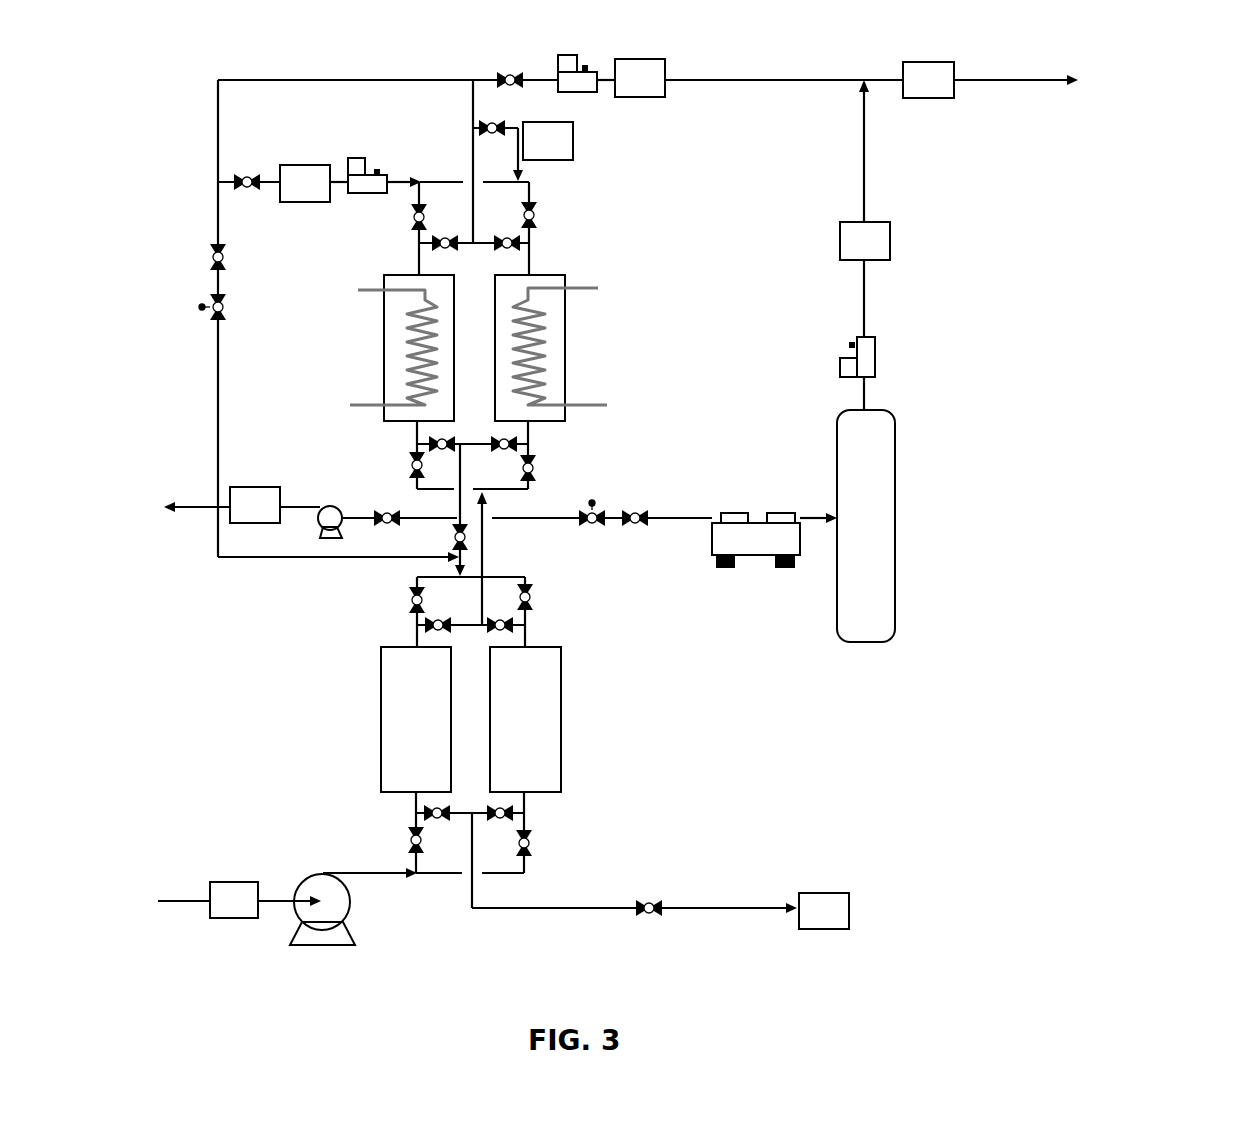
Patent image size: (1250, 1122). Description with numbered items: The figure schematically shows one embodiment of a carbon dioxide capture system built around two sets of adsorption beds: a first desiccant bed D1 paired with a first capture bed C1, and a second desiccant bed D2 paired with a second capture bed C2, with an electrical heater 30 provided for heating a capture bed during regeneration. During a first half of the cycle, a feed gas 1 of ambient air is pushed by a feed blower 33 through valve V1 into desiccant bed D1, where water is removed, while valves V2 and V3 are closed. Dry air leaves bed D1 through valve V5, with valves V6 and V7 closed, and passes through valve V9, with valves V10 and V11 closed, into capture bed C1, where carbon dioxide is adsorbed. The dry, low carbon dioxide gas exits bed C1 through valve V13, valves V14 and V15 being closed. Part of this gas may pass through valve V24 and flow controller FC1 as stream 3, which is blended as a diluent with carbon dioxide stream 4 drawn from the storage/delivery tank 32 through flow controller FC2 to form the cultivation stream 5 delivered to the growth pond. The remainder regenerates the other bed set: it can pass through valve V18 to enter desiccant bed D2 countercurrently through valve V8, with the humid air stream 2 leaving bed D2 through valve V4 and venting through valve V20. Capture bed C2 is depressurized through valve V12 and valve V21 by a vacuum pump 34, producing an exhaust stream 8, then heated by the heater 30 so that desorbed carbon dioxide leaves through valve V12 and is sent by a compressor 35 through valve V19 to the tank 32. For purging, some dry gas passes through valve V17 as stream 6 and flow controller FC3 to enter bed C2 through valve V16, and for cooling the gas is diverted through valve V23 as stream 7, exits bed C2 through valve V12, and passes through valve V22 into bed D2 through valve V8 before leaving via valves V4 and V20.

The feed gas 1 is at (234, 900).
The humid air stream 2 is at (824, 911).
The dry, low CO2 content gas stream 3 is at (640, 78).
The CO2 stream 4 is at (865, 241).
The cultivation stream 5 is at (928, 80).
The stream 6 is at (305, 183).
The stream 7 is at (548, 141).
The exhaust to ambient air stream 8 is at (255, 505).
The electrical heater 30 is at (580, 405).
The storage/delivery tank 32 is at (895, 467).
The feed blower 33 is at (313, 882).
The vacuum pump 34 is at (330, 506).
The compressor 35 is at (735, 511).
The first CO2 capture bed C1 is at (384, 348).
The second CO2 capture bed C2 is at (565, 370).
The first desiccant bed D1 is at (416, 719).
The second desiccant bed D2 is at (525, 719).
The flow controller FC1 is at (575, 54).
The flow controller FC2 is at (875, 355).
The flow controller FC3 is at (366, 160).
The valve V1 is at (407, 832).
The valve V2 is at (533, 841).
The valve V3 is at (438, 822).
The valve V4 is at (498, 822).
The valve V5 is at (441, 616).
The valve V6 is at (499, 616).
The valve V7 is at (409, 601).
The valve V8 is at (533, 598).
The valve V9 is at (409, 462).
The valve V10 is at (538, 468).
The valve V11 is at (441, 452).
The valve V12 is at (503, 452).
The valve V13 is at (444, 232).
The valve V14 is at (506, 232).
The valve V15 is at (410, 217).
The valve V16 is at (539, 215).
The valve V17 is at (250, 173).
The valve V18 is at (224, 250).
The valve V19 is at (640, 508).
The valve V20 is at (652, 897).
The valve V21 is at (388, 505).
The valve V22 is at (451, 537).
The valve V23 is at (494, 118).
The valve V24 is at (503, 72).